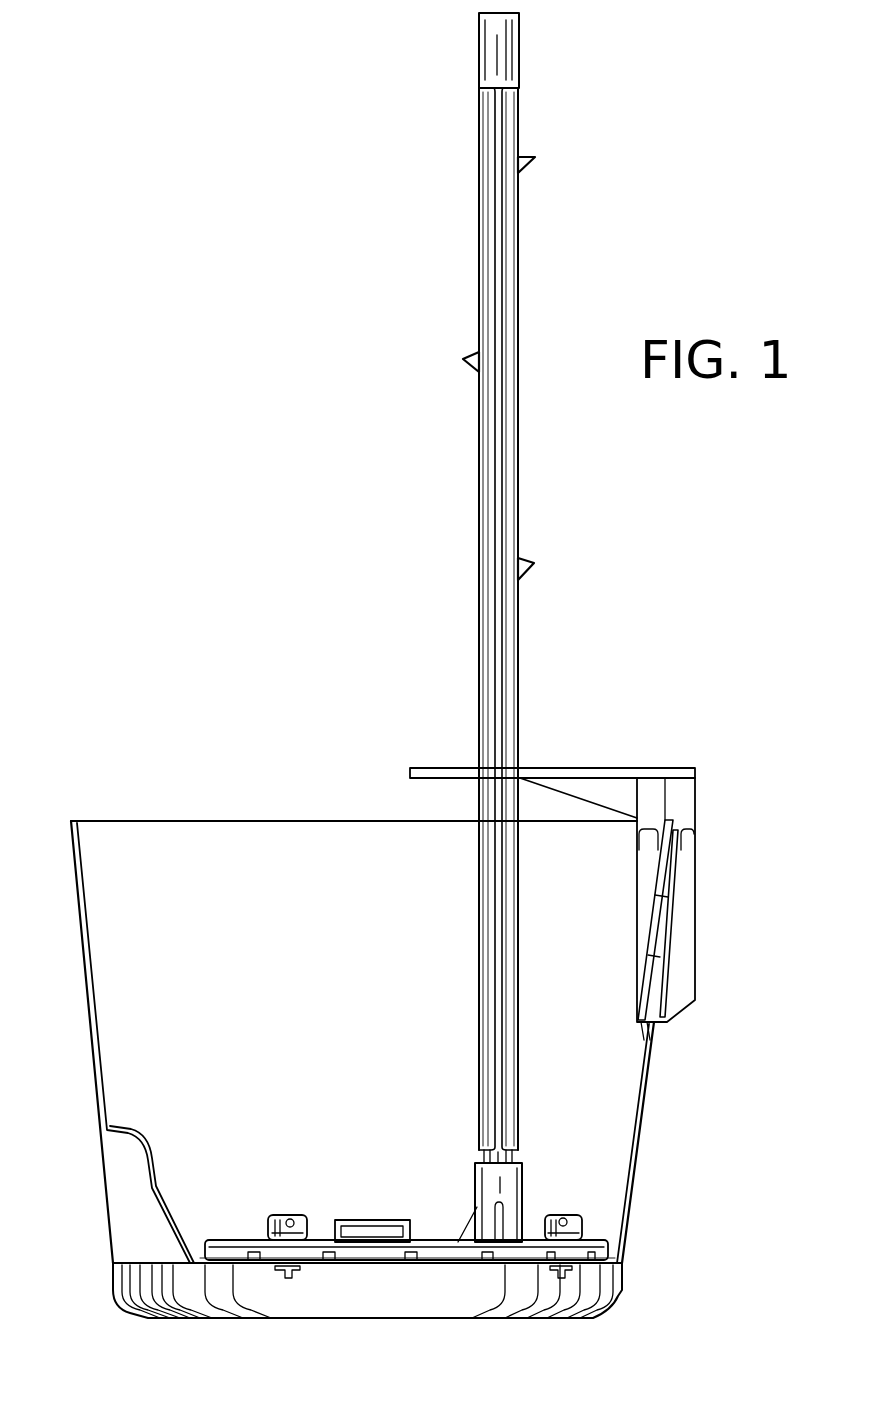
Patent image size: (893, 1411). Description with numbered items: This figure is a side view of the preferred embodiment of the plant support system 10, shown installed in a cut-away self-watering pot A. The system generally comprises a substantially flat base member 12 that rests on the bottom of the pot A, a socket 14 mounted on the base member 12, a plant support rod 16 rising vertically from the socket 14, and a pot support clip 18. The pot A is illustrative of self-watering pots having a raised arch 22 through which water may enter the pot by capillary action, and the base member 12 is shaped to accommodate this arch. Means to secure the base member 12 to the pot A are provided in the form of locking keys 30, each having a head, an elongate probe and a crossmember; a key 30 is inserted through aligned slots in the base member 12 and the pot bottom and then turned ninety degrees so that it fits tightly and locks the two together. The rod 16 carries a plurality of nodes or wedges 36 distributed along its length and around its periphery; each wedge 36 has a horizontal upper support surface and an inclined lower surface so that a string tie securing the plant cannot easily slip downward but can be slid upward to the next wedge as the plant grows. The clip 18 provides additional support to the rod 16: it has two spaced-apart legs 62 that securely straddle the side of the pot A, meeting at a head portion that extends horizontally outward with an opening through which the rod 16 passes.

The plant support system 10 is at (205, 620).
The base member 12 is at (228, 1240).
The socket 14 is at (522, 1195).
The plant support rod 16 is at (520, 678).
The support clip 18 is at (697, 797).
The raised arch 22 is at (352, 1228).
The locking key 30 is at (297, 1215).
The wedge 36 is at (473, 352).
The leg 62 is at (688, 943).
The pot A is at (655, 1100).